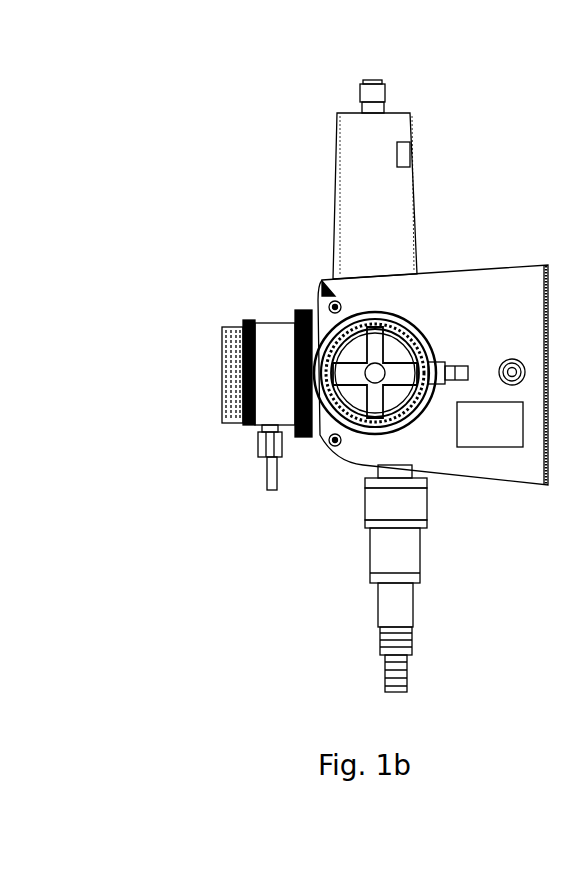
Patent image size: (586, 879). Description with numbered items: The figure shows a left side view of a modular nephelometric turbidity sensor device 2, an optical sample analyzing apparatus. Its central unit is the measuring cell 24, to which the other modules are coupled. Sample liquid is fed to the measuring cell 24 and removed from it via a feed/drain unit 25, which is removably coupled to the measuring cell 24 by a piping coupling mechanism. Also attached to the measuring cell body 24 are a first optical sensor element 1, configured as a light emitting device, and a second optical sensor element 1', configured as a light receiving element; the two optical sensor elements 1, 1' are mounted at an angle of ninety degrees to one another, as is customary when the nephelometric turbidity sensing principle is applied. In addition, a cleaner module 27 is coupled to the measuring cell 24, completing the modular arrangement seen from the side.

The modular nephelometric turbidity sensor device 2 is at (445, 137).
The cleaner module 27 is at (355, 193).
The first optical sensor element 1 is at (218, 323).
The second optical sensor element 1' is at (156, 425).
The measuring cell 24 is at (274, 419).
The feed/drain unit 25 is at (375, 558).